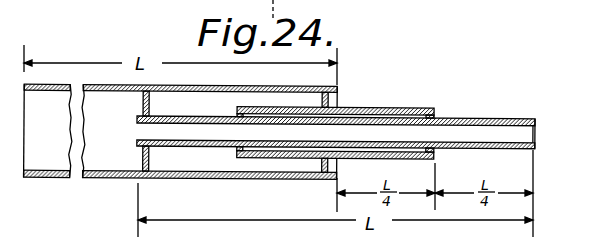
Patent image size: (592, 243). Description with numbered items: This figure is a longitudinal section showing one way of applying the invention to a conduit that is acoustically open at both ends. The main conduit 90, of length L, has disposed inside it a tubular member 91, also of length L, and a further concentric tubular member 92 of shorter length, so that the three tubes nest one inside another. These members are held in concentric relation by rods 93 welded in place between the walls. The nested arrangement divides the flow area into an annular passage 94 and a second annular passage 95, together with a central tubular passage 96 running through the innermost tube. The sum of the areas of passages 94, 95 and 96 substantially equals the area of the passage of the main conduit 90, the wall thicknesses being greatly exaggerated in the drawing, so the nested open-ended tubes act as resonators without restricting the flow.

The conduit 90 is at (107, 178).
The tubular member 91 is at (497, 118).
The concentric tubular member 92 is at (385, 107).
The rods 93 is at (150, 102).
The annular passage 94 is at (283, 165).
The annular passage 95 is at (426, 112).
The central tubular passage 96 is at (527, 133).